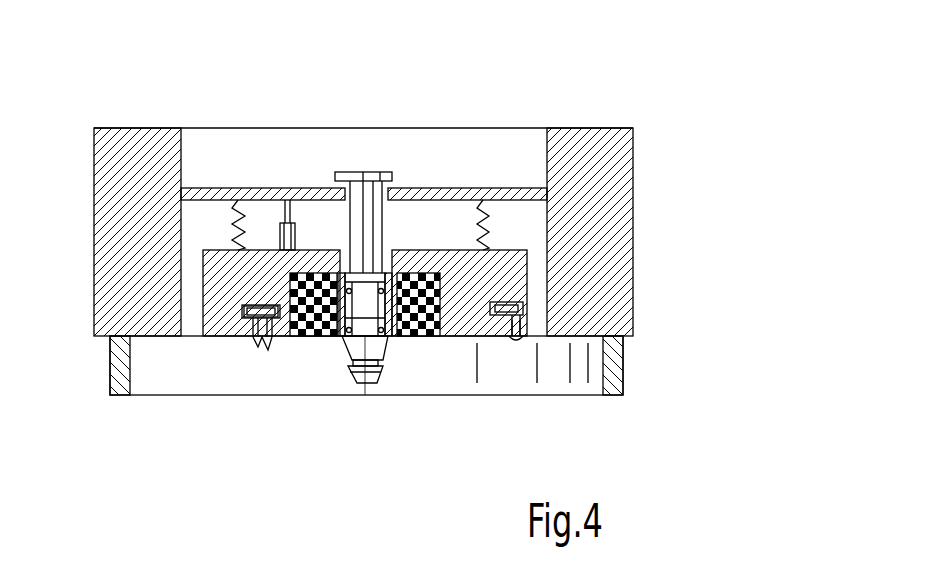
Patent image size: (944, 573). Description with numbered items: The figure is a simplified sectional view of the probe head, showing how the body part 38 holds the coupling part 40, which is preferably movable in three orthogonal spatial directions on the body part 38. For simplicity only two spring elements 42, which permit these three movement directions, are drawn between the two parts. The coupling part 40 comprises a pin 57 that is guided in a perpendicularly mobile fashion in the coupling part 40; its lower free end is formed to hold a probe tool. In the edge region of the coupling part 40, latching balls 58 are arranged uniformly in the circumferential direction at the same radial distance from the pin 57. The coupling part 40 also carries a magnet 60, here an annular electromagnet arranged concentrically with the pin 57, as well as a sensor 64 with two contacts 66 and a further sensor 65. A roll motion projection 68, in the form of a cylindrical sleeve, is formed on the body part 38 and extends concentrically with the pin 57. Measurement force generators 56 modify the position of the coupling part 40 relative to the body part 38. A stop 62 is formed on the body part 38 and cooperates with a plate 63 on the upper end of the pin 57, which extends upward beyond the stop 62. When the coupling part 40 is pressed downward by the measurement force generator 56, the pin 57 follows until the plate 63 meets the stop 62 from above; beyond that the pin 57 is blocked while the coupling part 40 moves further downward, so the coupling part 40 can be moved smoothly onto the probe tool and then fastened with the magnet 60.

The body part 38 is at (627, 152).
The coupling part 40 is at (457, 317).
The spring elements 42 is at (480, 205).
The measurement force generators 56 is at (278, 236).
The pin 57 is at (388, 384).
The latching balls 58 is at (517, 345).
The magnet 60 is at (322, 337).
The stop 62 is at (403, 190).
The plate 63 is at (350, 172).
The sensor 64 is at (243, 312).
The sensor 65 is at (522, 305).
The contacts 66 is at (258, 347).
The roll motion projection 68 is at (623, 367).